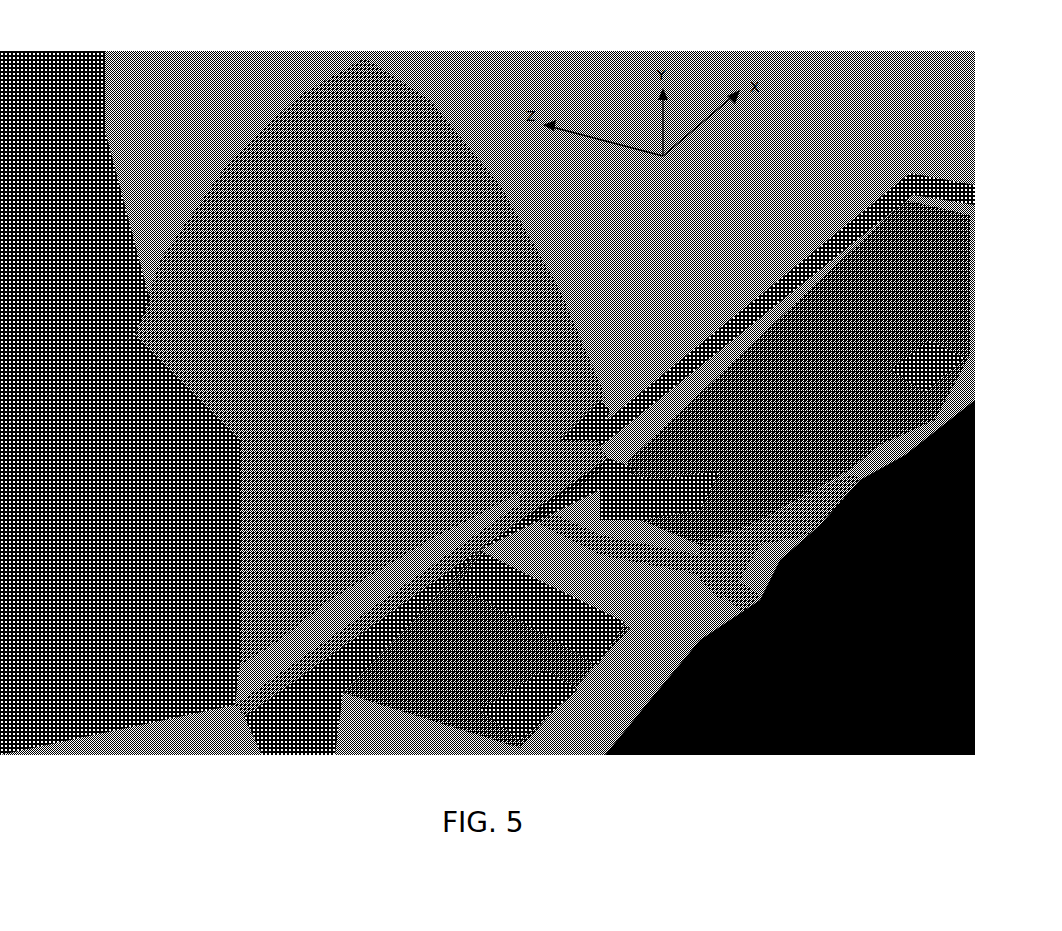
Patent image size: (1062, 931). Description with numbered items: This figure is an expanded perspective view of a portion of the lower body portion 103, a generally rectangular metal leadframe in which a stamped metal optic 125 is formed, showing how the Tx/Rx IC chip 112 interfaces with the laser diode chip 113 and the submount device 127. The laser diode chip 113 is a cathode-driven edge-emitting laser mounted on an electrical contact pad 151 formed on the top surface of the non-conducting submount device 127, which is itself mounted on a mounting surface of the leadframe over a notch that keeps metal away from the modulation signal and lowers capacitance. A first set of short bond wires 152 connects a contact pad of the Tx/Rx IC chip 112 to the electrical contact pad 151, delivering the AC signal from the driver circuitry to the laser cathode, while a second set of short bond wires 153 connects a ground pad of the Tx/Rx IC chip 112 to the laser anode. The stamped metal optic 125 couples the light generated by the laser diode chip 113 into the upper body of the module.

The lower body portion 103 is at (943, 108).
The Tx/Rx IC chip 112 is at (869, 756).
The laser diode chip 113 is at (566, 493).
The stamped metal optic 125 is at (133, 338).
The submount device 127 is at (333, 684).
The electrical contact pad 151 is at (738, 543).
The first set of short bond wires 152 is at (833, 505).
The second set of short bond wires 153 is at (703, 580).